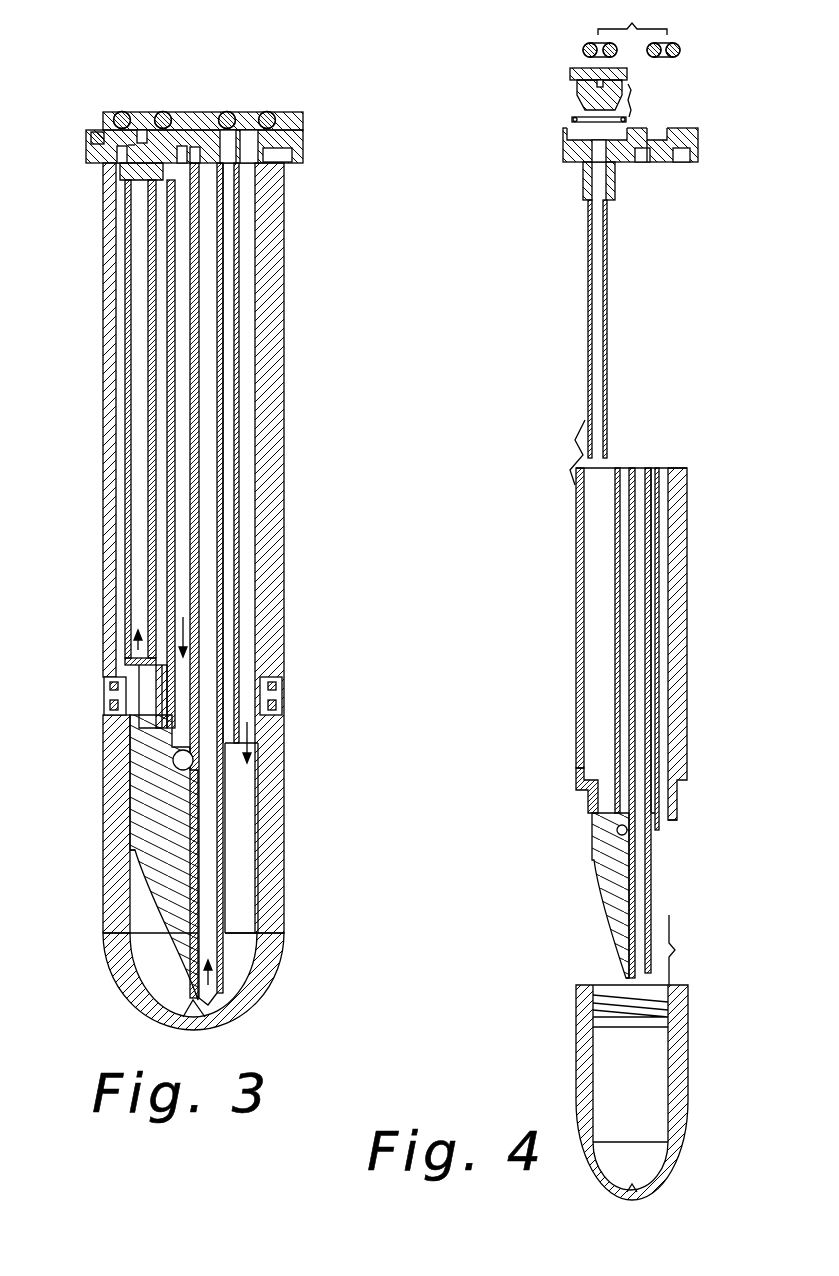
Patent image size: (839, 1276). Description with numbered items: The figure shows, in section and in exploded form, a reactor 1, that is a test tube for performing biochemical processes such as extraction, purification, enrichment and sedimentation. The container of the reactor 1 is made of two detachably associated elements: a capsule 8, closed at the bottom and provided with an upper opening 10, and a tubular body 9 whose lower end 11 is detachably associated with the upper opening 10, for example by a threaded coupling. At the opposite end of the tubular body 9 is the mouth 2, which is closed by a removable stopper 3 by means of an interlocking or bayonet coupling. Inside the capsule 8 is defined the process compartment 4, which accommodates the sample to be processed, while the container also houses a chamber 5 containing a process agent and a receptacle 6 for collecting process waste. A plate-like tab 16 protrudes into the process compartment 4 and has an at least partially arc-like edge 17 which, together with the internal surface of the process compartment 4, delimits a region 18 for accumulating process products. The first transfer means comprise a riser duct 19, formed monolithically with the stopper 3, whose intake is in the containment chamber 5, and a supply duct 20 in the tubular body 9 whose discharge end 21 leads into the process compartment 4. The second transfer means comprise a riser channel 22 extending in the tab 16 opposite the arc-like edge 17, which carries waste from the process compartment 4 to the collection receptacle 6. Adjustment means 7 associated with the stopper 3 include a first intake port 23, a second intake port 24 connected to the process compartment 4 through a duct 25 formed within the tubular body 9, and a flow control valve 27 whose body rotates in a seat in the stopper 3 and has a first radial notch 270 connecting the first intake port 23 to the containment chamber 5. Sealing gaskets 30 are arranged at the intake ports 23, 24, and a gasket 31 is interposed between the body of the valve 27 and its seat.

In FIG. 3, the reactor 1 is at (360, 322).
In FIG. 4, the reactor 1 is at (516, 748).
In FIG. 4, the mouth 2 is at (682, 468).
In FIG. 3, the stopper 3 is at (312, 159).
In FIG. 4, the stopper 3 is at (702, 146).
In FIG. 3, the process compartment 4 is at (240, 818).
In FIG. 4, the process compartment 4 is at (605, 1050).
In FIG. 3, the containment chamber 5 is at (120, 697).
In FIG. 4, the containment chamber 5 is at (590, 682).
In FIG. 3, the collection receptacle 6 is at (232, 505).
In FIG. 4, the collection receptacle 6 is at (653, 545).
In FIG. 3, the adjustment means 7 is at (290, 100).
In FIG. 3, the capsule 8 is at (287, 855).
In FIG. 4, the capsule 8 is at (692, 1085).
In FIG. 3, the tubular body 9 is at (286, 417).
In FIG. 4, the tubular body 9 is at (691, 700).
In FIG. 4, the upper opening 10 is at (682, 988).
In FIG. 3, the lower end 11 is at (272, 705).
In FIG. 4, the lower end 11 is at (675, 798).
In FIG. 3, the plate-like tab 16 is at (145, 830).
In FIG. 4, the plate-like tab 16 is at (605, 880).
In FIG. 3, the arc-like edge 17 is at (160, 990).
In FIG. 4, the arc-like edge 17 is at (620, 930).
In FIG. 3, the accumulation region 18 is at (145, 943).
In FIG. 3, the riser duct 19 is at (140, 497).
In FIG. 4, the riser duct 19 is at (598, 320).
In FIG. 3, the supply duct 20 is at (172, 365).
In FIG. 4, the supply duct 20 is at (625, 588).
In FIG. 3, the discharge end 21 is at (180, 762).
In FIG. 4, the discharge end 21 is at (618, 834).
In FIG. 3, the riser channel 22 is at (210, 910).
In FIG. 4, the riser channel 22 is at (643, 890).
In FIG. 3, the first intake port 23 is at (143, 128).
In FIG. 4, the first intake port 23 is at (572, 70).
In FIG. 3, the second intake port 24 is at (247, 128).
In FIG. 4, the second intake port 24 is at (665, 128).
In FIG. 3, the duct 25 is at (243, 598).
In FIG. 4, the duct 25 is at (662, 657).
In FIG. 3, the flow control valve 27 is at (100, 112).
In FIG. 4, the flow control valve 27 is at (565, 95).
In FIG. 3, the sealing gaskets 30 is at (120, 112).
In FIG. 4, the sealing gaskets 30 is at (582, 45).
In FIG. 3, the gasket 31 is at (92, 130).
In FIG. 4, the gasket 31 is at (571, 119).
In FIG. 3, the first radial notch 270 is at (128, 145).
In FIG. 4, the first radial notch 270 is at (630, 85).